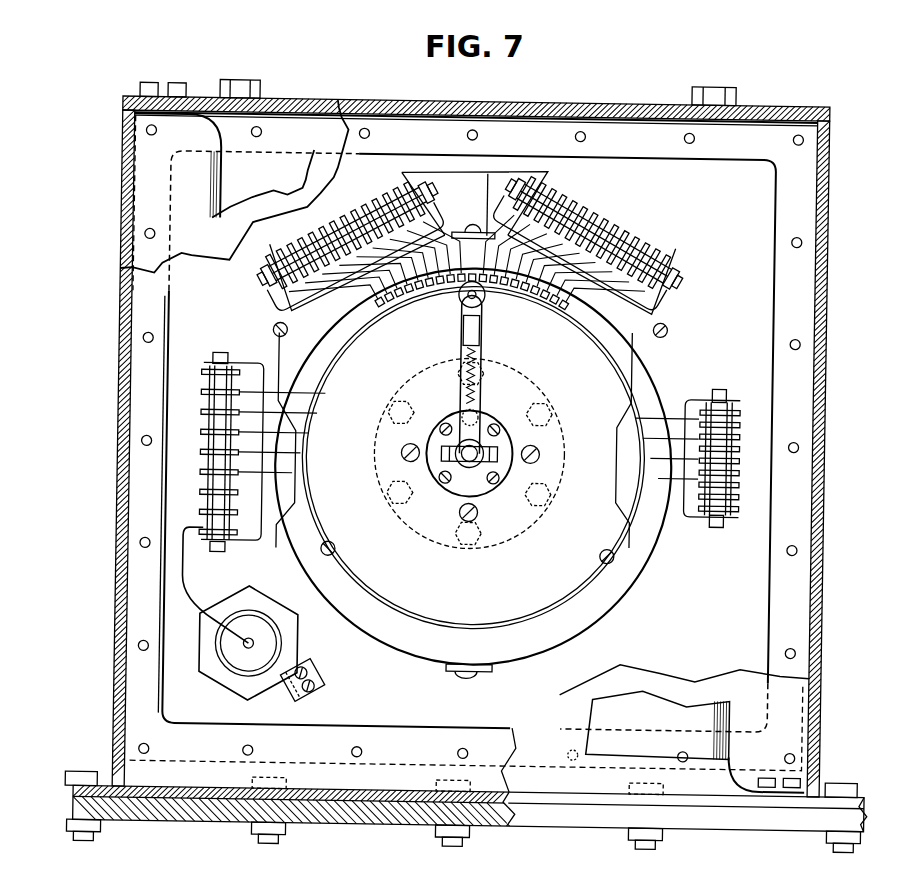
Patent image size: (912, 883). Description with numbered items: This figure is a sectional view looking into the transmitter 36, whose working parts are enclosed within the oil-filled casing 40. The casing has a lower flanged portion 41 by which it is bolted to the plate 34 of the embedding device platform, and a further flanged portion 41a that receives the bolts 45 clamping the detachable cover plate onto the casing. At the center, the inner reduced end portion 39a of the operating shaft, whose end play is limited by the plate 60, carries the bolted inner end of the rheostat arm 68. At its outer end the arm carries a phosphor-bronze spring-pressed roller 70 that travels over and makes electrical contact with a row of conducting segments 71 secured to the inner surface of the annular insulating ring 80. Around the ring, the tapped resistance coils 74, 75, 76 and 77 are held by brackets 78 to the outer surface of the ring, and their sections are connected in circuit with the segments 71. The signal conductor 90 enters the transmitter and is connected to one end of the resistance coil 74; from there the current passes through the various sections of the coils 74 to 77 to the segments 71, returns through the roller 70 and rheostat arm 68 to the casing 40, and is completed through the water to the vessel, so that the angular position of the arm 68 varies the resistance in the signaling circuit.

The plate 34 is at (545, 812).
The transmitter 36 is at (602, 97).
The inner reduced end portion of the shaft 39a is at (468, 440).
The casing 40 is at (130, 388).
The lower flanged portion 41 is at (390, 805).
The flanged portion 41a is at (803, 166).
The bolts 45 is at (476, 125).
The plate 60 is at (458, 478).
The rheostat arm 68 is at (483, 346).
The spring-pressed roller 70 is at (487, 297).
The conducting segments 71 is at (467, 262).
The resistance coil 74 is at (208, 466).
The resistance coil 75 is at (370, 210).
The resistance coil 76 is at (601, 207).
The resistance coil 77 is at (740, 445).
The brackets 78 is at (250, 362).
The annular ring 80 is at (468, 225).
The conductor 90 is at (197, 574).